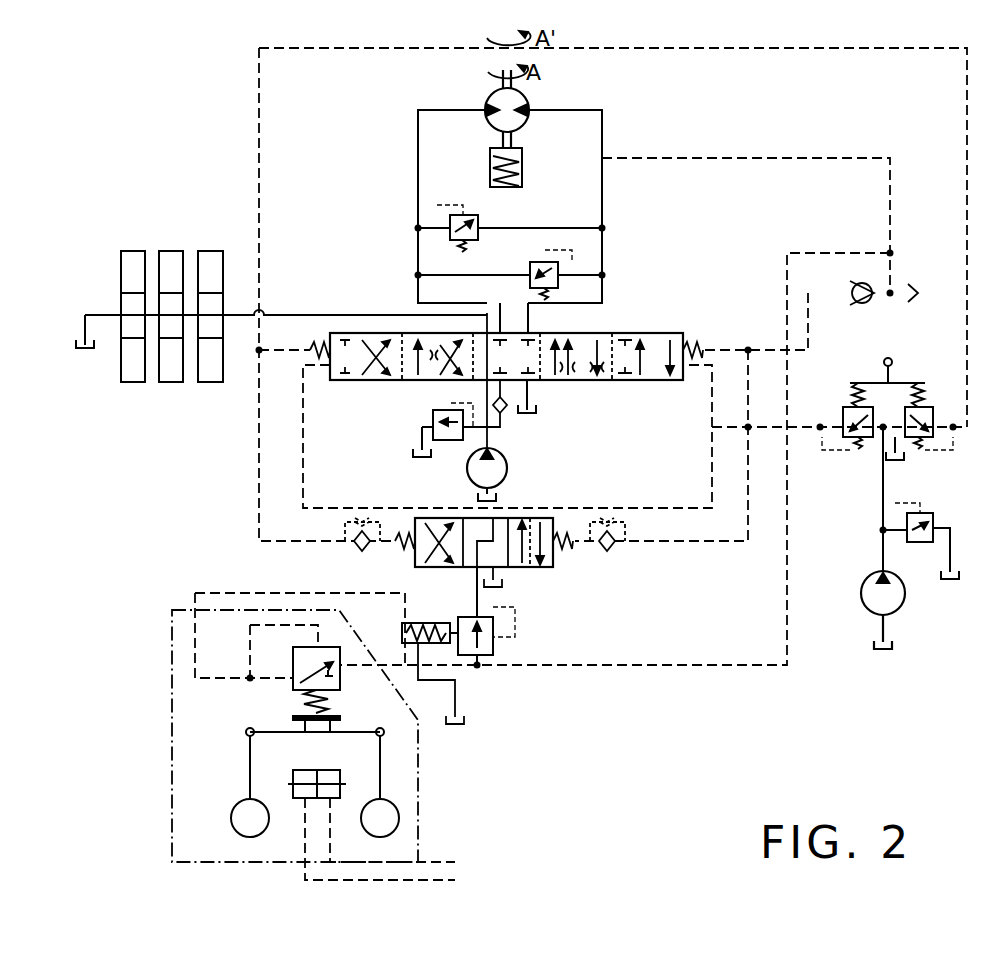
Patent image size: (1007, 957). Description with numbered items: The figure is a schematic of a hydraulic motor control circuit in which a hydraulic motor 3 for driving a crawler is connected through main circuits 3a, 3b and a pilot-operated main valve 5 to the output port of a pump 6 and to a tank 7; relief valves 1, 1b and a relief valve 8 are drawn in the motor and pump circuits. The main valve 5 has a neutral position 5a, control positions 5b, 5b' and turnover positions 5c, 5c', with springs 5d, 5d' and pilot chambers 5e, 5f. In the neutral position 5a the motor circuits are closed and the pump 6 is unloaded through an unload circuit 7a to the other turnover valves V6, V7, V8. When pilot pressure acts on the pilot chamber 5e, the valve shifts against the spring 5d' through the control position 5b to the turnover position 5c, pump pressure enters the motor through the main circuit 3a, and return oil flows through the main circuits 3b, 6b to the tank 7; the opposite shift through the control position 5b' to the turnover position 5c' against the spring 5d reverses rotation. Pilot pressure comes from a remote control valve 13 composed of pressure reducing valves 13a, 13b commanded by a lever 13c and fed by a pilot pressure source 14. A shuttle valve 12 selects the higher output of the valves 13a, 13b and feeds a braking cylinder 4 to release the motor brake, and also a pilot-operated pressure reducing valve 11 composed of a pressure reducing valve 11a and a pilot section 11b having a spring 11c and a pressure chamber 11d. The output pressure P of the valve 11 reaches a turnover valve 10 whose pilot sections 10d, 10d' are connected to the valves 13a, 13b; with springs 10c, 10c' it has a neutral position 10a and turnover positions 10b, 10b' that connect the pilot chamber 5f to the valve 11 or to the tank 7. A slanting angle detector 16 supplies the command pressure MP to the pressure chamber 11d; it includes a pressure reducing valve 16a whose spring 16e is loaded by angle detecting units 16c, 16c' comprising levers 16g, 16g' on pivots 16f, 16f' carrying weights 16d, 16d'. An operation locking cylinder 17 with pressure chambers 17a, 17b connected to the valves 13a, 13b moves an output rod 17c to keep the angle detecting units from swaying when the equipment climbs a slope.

The relief valve 1 is at (479, 218).
The relief valve 1b is at (532, 265).
The hydraulic motor 3 is at (529, 97).
The main circuit 3a is at (418, 136).
The main circuit 3b is at (602, 110).
The braking cylinder 4 is at (522, 180).
The main valve 5 is at (612, 317).
The neutral position 5a is at (510, 316).
The control position 5b is at (590, 405).
The control position 5b' is at (398, 398).
The turnover position 5c is at (636, 407).
The turnover position 5c' is at (346, 405).
The spring 5d is at (711, 325).
The spring 5d' is at (299, 339).
The pilot chamber 5e is at (326, 366).
The pilot chamber 5f is at (340, 380).
The pump 6 is at (507, 470).
The main circuit 6b is at (529, 388).
The tank 7 is at (90, 356).
The unload circuit 7a is at (286, 314).
The relief valve 8 is at (432, 420).
The turnover valve 10 is at (546, 565).
The neutral position 10a is at (492, 541).
The turnover position 10b is at (529, 581).
The turnover position 10b' is at (397, 575).
The spring 10c is at (602, 514).
The spring 10c' is at (372, 512).
The pilot section 10d is at (615, 549).
The pilot section 10d' is at (346, 548).
The pressure reducing valve 11 is at (525, 639).
The pressure reducing valve 11a is at (498, 660).
The pilot section 11b is at (440, 662).
The spring 11c is at (418, 652).
The pressure chamber 11d is at (400, 630).
The shuttle valve 12 is at (905, 262).
The remote control valve 13 is at (922, 463).
The pressure reducing valve 13a is at (842, 408).
The pressure reducing valve 13b is at (926, 408).
The lever 13c is at (894, 366).
The pilot pressure source 14 is at (865, 610).
The slanting angle detector 16 is at (172, 857).
The pressure reducing valve 16a is at (290, 688).
The angle detecting unit 16c is at (443, 767).
The angle detecting unit 16c' is at (178, 762).
The weight 16d is at (426, 818).
The weight 16d' is at (189, 804).
The spring 16e is at (324, 698).
The pivot 16f is at (424, 741).
The pivot 16f' is at (182, 704).
The lever 16g is at (428, 789).
The lever 16g' is at (180, 752).
The operation locking cylinder 17 is at (318, 800).
The pressure chamber 17a is at (300, 800).
The pressure chamber 17b is at (355, 764).
The output rod 17c is at (290, 774).
The output pressure P is at (466, 616).
The command pressure MP is at (216, 580).
The turnover valve V6 is at (210, 382).
The turnover valve V7 is at (171, 382).
The turnover valve V8 is at (133, 382).